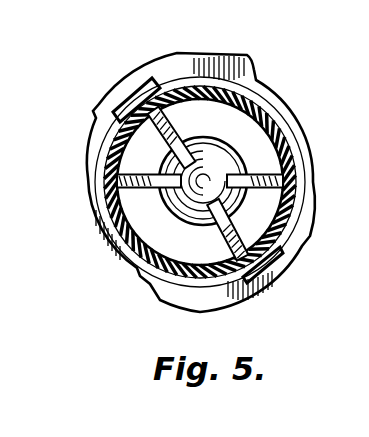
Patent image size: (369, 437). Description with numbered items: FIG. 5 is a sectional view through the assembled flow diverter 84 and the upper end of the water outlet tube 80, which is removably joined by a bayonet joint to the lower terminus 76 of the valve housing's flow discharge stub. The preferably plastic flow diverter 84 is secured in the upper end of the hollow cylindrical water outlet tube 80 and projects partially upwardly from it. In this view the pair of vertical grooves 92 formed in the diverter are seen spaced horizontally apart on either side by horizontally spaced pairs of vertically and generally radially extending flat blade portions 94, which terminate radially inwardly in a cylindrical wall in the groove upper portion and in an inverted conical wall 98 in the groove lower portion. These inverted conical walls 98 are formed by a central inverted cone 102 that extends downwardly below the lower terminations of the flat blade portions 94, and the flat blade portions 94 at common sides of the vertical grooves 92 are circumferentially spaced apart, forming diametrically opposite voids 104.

The lower terminus 76 is at (95, 205).
The water outlet tube 80 is at (280, 103).
The flow diverter 84 is at (133, 158).
The vertical grooves 92 is at (232, 117).
The flat blade portions 94 is at (181, 95).
The inverted conical wall 98 is at (207, 150).
The inverted cone 102 is at (275, 210).
The voids 104 is at (140, 140).